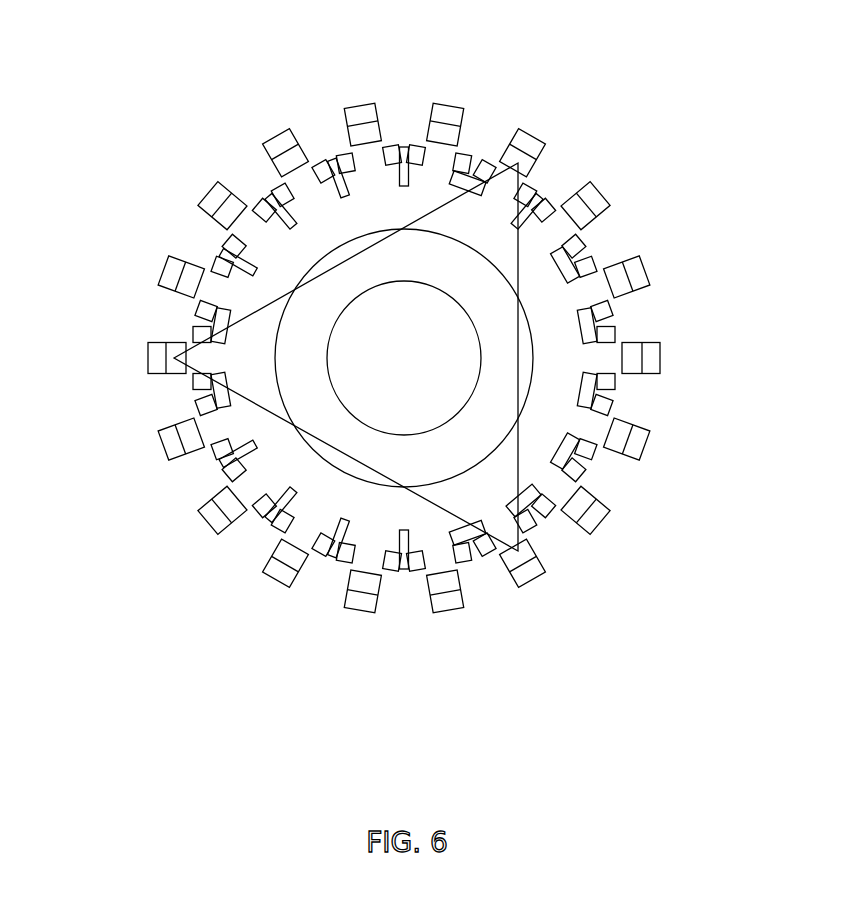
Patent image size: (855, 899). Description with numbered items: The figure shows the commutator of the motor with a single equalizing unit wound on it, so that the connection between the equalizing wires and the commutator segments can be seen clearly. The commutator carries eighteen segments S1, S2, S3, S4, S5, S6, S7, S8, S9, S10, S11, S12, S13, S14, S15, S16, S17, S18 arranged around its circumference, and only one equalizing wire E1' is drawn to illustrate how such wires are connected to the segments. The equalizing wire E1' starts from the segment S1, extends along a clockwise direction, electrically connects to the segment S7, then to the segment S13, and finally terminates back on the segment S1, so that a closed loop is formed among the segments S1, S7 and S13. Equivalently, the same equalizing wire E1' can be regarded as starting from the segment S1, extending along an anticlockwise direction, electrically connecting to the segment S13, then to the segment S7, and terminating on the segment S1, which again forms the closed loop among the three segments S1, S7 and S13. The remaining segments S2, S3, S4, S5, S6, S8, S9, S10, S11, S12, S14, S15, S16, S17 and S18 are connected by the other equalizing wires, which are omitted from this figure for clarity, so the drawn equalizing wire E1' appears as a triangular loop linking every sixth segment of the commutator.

The segment S1 is at (157, 358).
The segment S2 is at (172, 274).
The segment S3 is at (215, 199).
The segment S4 is at (280, 144).
The segment S5 is at (361, 115).
The segment S6 is at (447, 115).
The segment S7 is at (528, 144).
The segment S8 is at (593, 199).
The segment S9 is at (636, 274).
The segment S10 is at (651, 358).
The segment S11 is at (636, 442).
The segment S12 is at (593, 517).
The segment S13 is at (528, 572).
The segment S14 is at (447, 601).
The segment S15 is at (361, 601).
The segment S16 is at (281, 572).
The segment S17 is at (215, 517).
The segment S18 is at (172, 443).
The equalizing wire E1' is at (345, 322).